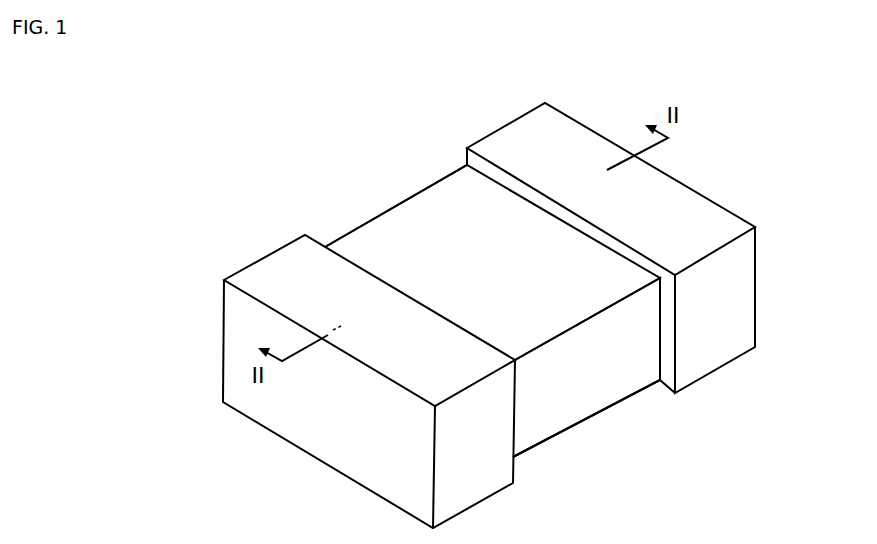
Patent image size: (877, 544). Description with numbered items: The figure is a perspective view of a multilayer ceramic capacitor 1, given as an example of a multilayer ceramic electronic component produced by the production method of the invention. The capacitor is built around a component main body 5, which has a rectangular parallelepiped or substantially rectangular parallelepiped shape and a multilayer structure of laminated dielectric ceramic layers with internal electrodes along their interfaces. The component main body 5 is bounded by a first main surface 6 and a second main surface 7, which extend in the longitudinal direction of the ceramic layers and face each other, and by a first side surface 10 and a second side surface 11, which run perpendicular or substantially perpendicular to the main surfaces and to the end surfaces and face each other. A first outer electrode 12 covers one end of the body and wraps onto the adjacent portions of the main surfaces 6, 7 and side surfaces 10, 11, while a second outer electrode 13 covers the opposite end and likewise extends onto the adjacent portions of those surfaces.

The multilayer ceramic capacitor 1 is at (403, 90).
The component main body 5 is at (487, 301).
The first main surface 6 is at (396, 211).
The second main surface 7 is at (547, 420).
The first side surface 10 is at (367, 247).
The second side surface 11 is at (607, 400).
The first outer electrode 12 is at (230, 298).
The second outer electrode 13 is at (695, 193).